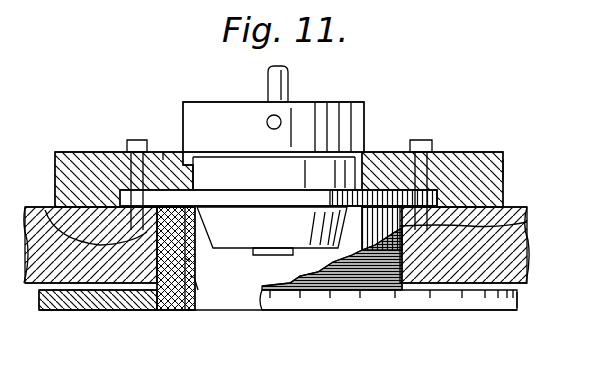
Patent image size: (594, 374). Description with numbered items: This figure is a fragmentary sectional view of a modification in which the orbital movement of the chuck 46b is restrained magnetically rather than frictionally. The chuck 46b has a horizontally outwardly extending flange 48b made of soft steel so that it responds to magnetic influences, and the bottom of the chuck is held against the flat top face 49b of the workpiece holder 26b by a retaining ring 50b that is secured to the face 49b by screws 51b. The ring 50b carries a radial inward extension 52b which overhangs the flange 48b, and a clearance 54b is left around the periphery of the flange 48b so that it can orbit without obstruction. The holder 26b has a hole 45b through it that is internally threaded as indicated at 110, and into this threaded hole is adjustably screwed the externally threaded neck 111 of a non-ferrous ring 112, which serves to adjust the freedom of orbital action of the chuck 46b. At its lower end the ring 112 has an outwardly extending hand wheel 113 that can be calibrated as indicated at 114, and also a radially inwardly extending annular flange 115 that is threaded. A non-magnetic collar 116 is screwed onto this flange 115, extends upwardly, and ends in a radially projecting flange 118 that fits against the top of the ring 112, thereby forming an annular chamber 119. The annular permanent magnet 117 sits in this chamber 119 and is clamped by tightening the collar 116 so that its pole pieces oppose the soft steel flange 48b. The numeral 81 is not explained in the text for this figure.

The knob stem 81 is at (268, 82).
The radial inward extension 52b is at (163, 152).
The screws 51b is at (134, 140).
The horizontally outwardly extending flange 48b is at (386, 190).
The retaining ring 50b is at (490, 152).
The clearance 54b is at (503, 175).
The flat top face 49b is at (503, 200).
The externally threaded neck 111 is at (527, 222).
The workpiece holder 26b is at (530, 250).
The hole 45b is at (45, 210).
The radially upwardly projecting flange 118 is at (173, 205).
The chuck 46b is at (300, 225).
The annular chamber 119 is at (190, 262).
The internal threads 110 is at (190, 276).
The radially inwardly extending annular flange 115 is at (182, 307).
The non-magnetic collar 116 is at (193, 287).
The annular permanent magnet 117 is at (160, 292).
The non-ferrous ring 112 is at (112, 315).
The calibration 114 is at (463, 300).
The hand wheel 113 is at (518, 300).